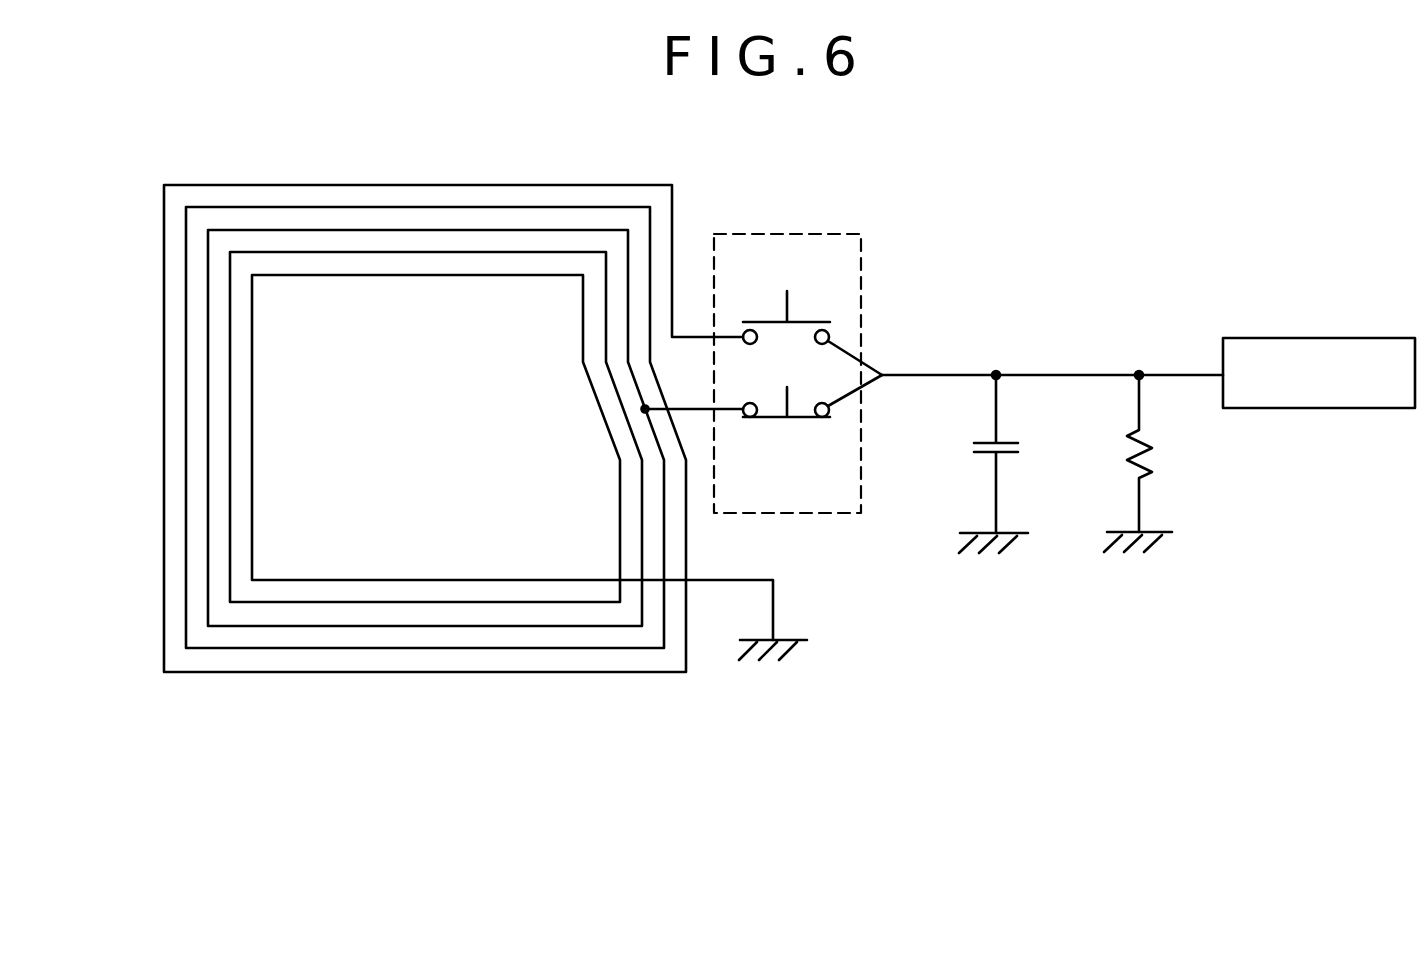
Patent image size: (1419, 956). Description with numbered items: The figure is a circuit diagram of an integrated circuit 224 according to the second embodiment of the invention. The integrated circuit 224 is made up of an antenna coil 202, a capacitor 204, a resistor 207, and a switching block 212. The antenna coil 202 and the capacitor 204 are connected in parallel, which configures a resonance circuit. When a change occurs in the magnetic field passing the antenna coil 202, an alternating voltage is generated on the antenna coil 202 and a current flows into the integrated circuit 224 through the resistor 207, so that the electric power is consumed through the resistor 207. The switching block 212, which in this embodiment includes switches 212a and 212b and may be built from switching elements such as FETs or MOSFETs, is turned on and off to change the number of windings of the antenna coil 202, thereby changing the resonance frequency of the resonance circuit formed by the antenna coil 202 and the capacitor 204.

The antenna coil 202 is at (162, 427).
The switching block 212 is at (823, 232).
The switch 212a is at (810, 317).
The switch 212b is at (815, 424).
The capacitor 204 is at (972, 447).
The resistor 207 is at (1152, 452).
The integrated circuit 224 is at (1050, 187).